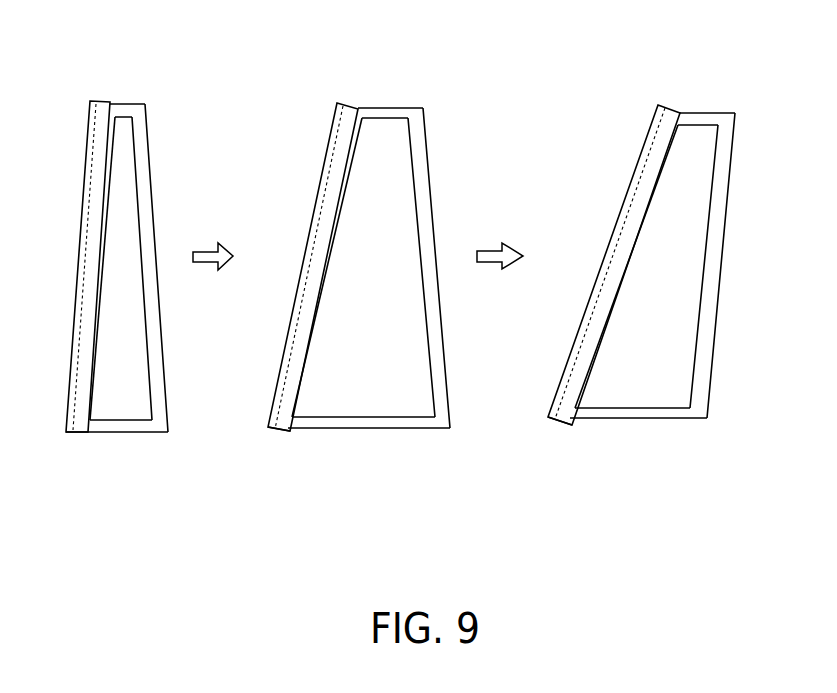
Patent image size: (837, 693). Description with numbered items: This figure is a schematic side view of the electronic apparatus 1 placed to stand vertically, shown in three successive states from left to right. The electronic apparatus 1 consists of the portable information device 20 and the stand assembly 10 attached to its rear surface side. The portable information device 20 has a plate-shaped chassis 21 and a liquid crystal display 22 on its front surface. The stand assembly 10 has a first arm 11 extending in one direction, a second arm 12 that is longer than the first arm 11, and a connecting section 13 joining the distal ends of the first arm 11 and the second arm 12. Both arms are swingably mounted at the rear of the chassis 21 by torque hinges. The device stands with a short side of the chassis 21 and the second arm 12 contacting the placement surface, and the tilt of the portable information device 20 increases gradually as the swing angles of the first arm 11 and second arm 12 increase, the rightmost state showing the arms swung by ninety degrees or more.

The electronic apparatus 1 is at (181, 65).
The stand assembly 10 is at (449, 269).
The first arm 11 is at (126, 116).
The second arm 12 is at (126, 434).
The connecting section 13 is at (150, 183).
The portable information device 20 is at (349, 257).
The chassis 21 is at (68, 437).
The liquid crystal display 22 is at (86, 199).